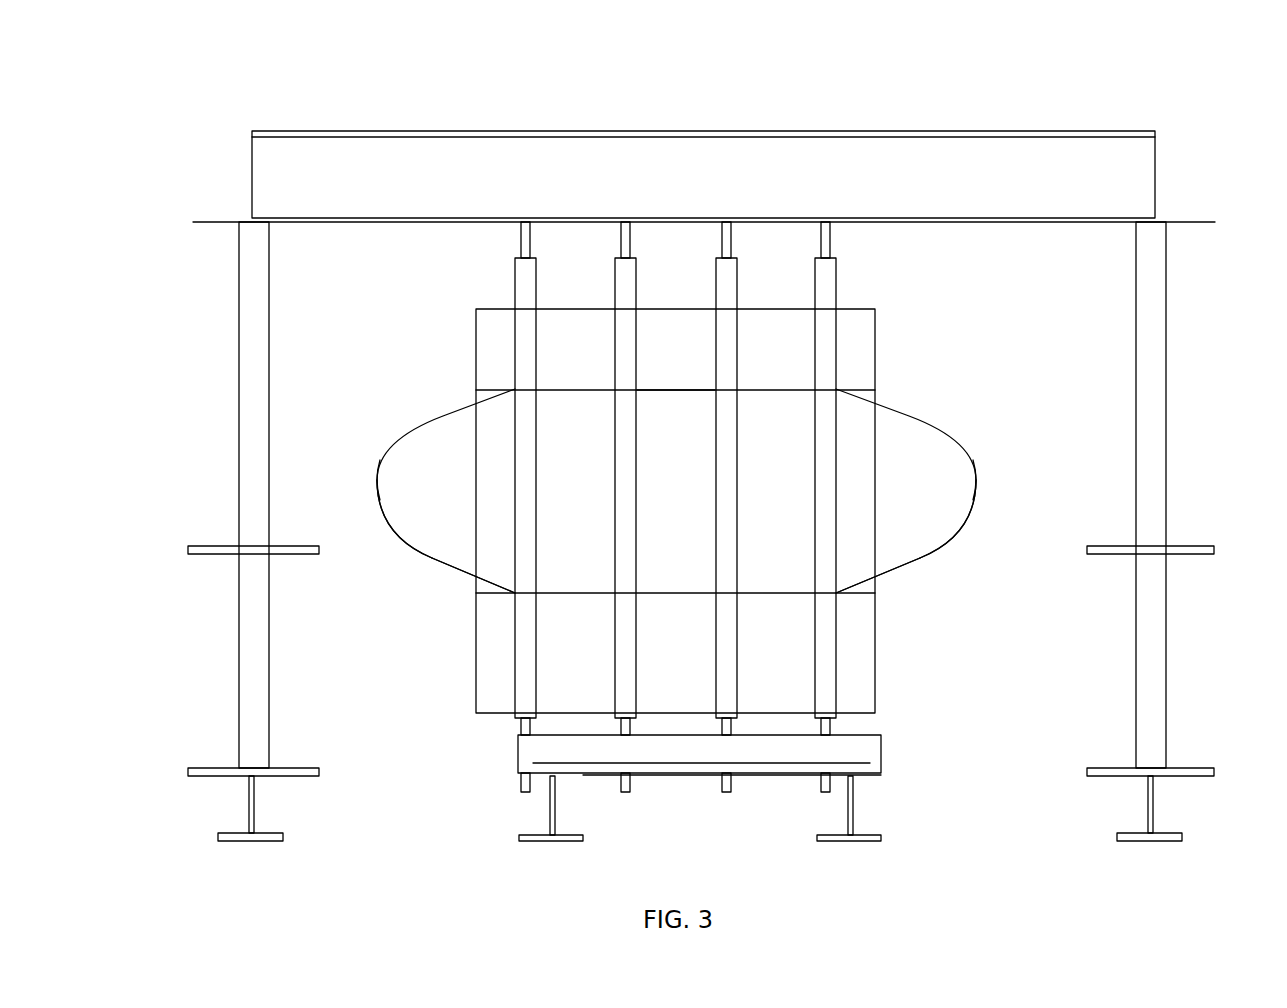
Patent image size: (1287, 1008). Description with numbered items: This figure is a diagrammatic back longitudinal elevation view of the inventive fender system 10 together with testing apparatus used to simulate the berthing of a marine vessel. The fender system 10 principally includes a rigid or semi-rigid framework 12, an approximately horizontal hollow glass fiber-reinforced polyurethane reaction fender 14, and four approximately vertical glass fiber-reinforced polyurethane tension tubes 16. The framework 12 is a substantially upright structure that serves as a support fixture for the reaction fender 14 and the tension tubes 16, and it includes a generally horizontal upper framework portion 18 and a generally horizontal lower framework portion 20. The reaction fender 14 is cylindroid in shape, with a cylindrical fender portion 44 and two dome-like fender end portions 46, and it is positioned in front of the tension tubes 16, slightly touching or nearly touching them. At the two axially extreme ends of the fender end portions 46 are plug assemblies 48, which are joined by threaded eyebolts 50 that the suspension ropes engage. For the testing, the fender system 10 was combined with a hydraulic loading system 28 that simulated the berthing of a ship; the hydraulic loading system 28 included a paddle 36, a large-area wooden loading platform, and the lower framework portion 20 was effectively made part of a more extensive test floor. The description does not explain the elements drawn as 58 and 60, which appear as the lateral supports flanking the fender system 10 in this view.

The fender system 10 is at (1183, 131).
The framework 12 is at (1183, 187).
The reaction fender 14 is at (453, 412).
The tension tubes 16 is at (537, 668).
The upper framework portion 18 is at (913, 223).
The lower framework portion 20 is at (660, 773).
The hydraulic loading system 28 is at (876, 332).
The paddle 36 is at (858, 370).
The cylindrical fender portion 44 is at (678, 413).
The fender end portions 46 is at (426, 537).
The plug assemblies 48 is at (377, 477).
The threaded eyebolts 50 is at (372, 490).
The left support column 58 is at (238, 358).
The right support column 60 is at (1170, 368).